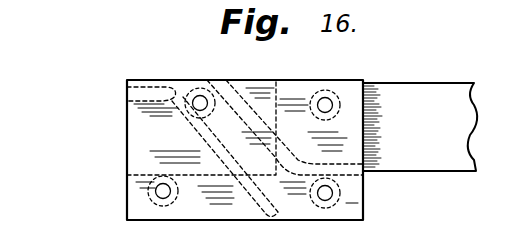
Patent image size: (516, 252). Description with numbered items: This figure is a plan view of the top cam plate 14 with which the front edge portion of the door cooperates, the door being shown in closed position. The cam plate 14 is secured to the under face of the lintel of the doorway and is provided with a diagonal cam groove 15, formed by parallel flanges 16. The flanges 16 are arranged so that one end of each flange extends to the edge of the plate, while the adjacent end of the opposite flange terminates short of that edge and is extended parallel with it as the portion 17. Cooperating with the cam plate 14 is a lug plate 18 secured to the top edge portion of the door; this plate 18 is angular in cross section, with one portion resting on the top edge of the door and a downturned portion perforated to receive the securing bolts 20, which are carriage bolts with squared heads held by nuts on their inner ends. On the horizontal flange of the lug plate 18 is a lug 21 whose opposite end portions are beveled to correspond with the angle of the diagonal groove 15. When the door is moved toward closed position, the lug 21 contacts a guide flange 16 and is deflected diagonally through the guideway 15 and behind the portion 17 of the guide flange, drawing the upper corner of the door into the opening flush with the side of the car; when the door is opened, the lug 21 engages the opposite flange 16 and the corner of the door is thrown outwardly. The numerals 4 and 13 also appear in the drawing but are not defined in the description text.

The arm 4 is at (445, 118).
The member 13 is at (510, 244).
The cam plate 14 is at (297, 107).
The diagonal cam groove 15 is at (234, 138).
The parallel flanges 16 is at (246, 112).
The extended portion of guide flange 17 is at (147, 109).
The lug plate 18 is at (196, 178).
The securing bolts 20 is at (147, 180).
The lug 21 is at (174, 83).